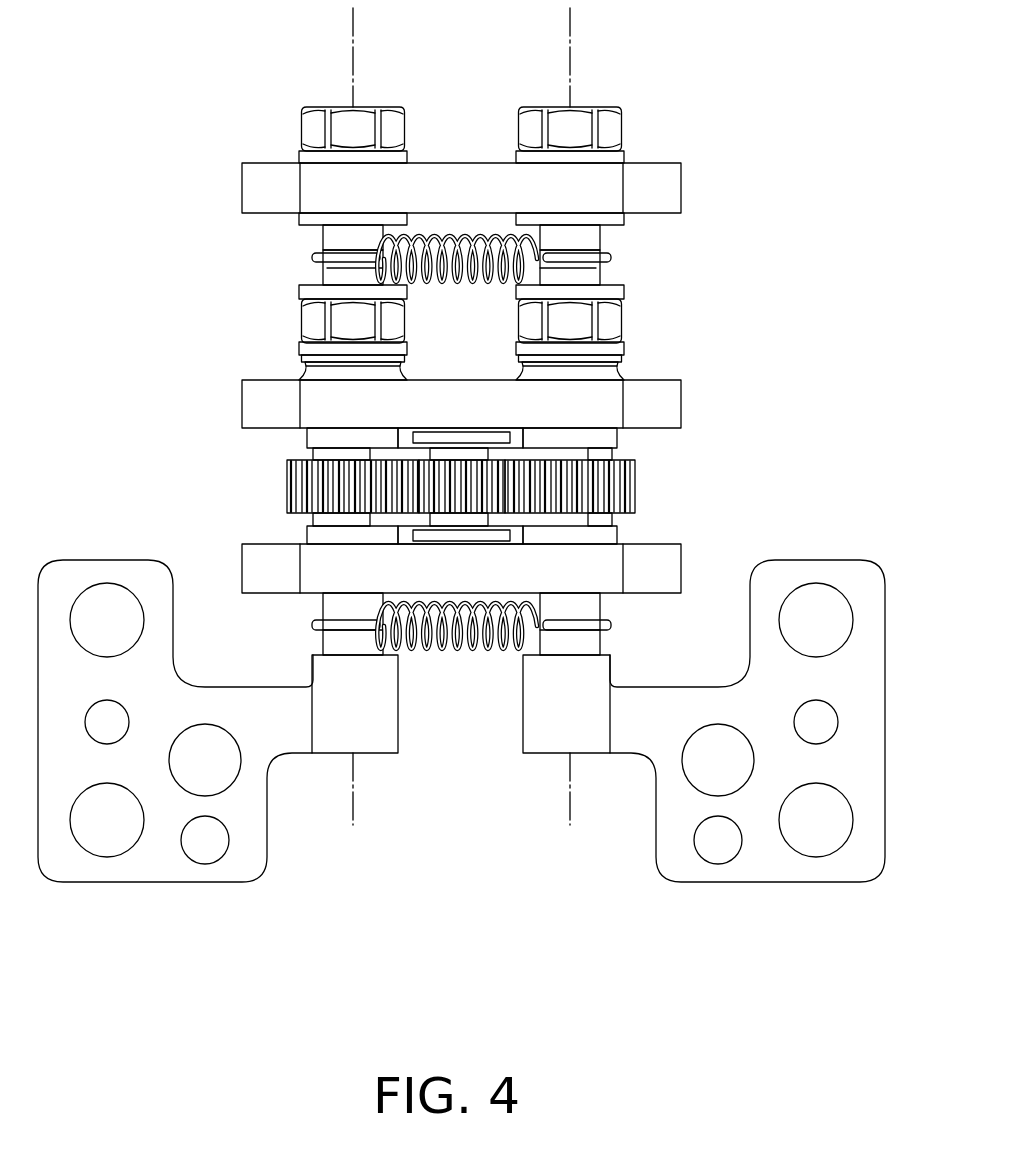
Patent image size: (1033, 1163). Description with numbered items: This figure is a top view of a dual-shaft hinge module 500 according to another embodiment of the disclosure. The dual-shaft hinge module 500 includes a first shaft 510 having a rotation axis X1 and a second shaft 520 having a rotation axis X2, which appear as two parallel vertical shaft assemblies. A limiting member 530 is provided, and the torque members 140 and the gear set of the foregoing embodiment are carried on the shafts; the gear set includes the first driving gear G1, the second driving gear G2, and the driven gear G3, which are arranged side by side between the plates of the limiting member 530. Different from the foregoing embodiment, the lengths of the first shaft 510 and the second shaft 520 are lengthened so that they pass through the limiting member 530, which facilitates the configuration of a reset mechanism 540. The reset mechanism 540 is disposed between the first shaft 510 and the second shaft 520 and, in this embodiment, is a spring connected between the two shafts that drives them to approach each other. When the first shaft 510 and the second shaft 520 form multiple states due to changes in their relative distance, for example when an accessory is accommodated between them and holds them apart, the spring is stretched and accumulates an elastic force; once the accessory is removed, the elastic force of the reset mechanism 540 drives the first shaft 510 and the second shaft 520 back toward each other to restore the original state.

The dual-shaft hinge module 500 is at (878, 992).
The first shaft 510 is at (630, 730).
The second shaft 520 is at (295, 730).
The limiting member 530 is at (650, 191).
The reset mechanism 540 is at (478, 236).
The torque members 140 is at (302, 345).
The first driving gear G1 is at (636, 487).
The second driving gear G2 is at (287, 487).
The driven gear G3 is at (470, 477).
The rotation axis X1 is at (569, 440).
The rotation axis X2 is at (351, 440).